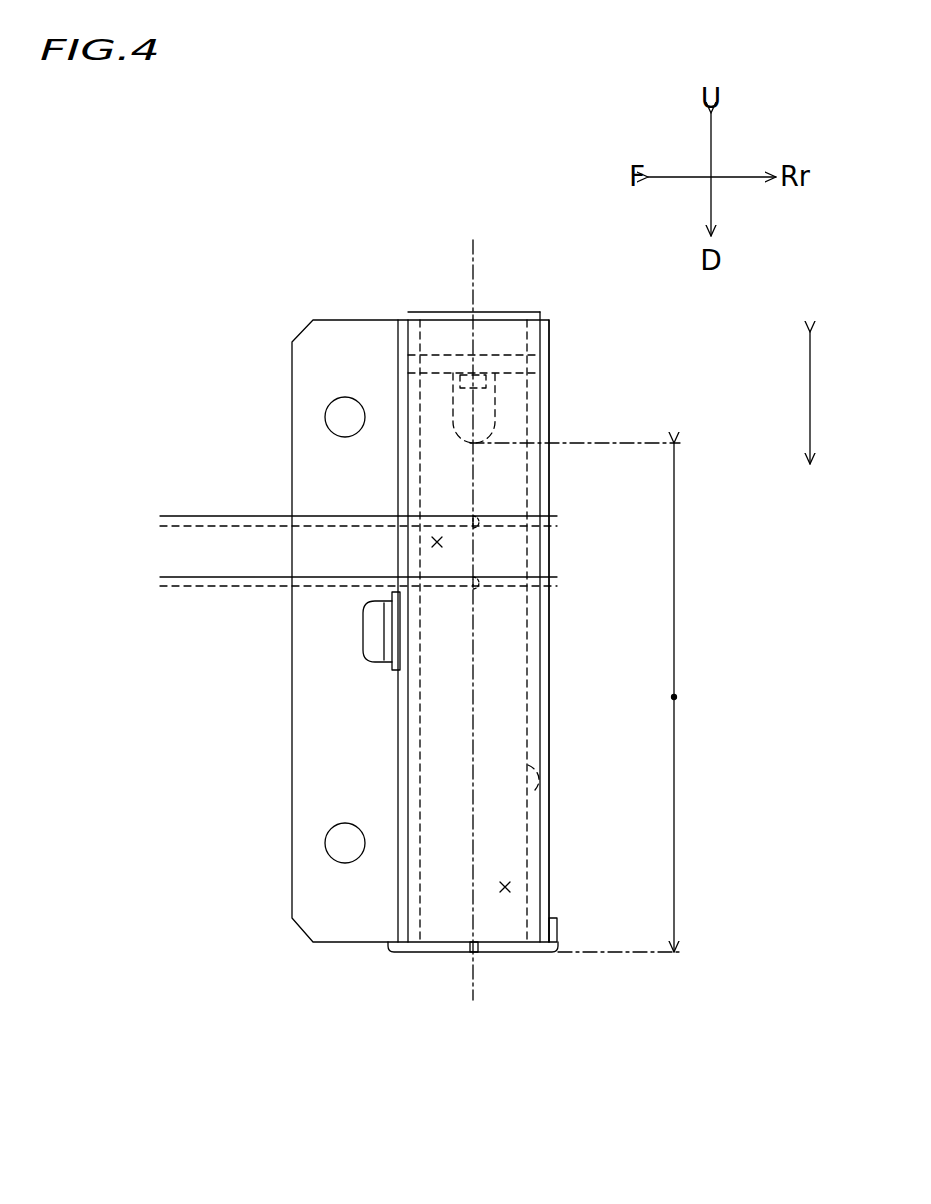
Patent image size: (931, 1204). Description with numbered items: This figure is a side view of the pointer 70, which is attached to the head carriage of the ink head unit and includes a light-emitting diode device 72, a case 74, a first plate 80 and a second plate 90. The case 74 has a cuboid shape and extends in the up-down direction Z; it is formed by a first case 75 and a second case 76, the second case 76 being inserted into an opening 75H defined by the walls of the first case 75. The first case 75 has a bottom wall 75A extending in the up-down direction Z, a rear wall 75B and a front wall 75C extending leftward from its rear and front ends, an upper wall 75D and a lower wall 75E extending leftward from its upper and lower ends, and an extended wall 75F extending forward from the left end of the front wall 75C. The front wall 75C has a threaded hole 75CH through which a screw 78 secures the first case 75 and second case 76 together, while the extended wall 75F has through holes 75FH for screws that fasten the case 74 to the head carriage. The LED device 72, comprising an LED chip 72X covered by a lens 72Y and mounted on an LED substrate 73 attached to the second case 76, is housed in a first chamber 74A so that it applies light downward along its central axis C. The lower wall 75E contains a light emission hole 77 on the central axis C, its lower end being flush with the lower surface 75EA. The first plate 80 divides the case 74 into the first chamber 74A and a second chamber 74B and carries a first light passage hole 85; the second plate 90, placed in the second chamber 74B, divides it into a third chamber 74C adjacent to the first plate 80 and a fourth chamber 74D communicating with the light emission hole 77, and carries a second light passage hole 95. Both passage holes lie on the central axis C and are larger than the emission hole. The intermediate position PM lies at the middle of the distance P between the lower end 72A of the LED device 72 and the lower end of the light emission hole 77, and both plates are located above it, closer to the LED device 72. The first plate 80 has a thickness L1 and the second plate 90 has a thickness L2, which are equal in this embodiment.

The pointer 70 is at (273, 287).
The light-emitting diode (LED) device 72 is at (500, 388).
The lower end of the LED device 72A is at (475, 443).
The LED chip 72X is at (460, 375).
The lens 72Y is at (470, 425).
The LED substrate 73 is at (500, 360).
The case 74 is at (350, 312).
The first chamber 74A is at (516, 434).
The second chamber 74B is at (515, 676).
The third chamber 74C is at (432, 542).
The fourth chamber 74D is at (510, 887).
The first case 75 is at (348, 942).
The bottom wall 75A is at (512, 946).
The rear wall 75B is at (548, 730).
The front wall 75C is at (420, 570).
The threaded hole 75CH is at (395, 625).
The upper wall 75D is at (485, 312).
The lower wall 75E is at (495, 952).
The lower surface of the lower wall 75EA is at (413, 952).
The extended wall 75F is at (300, 708).
The through holes 75FH is at (338, 415).
The opening 75H is at (535, 786).
The second case 76 is at (543, 855).
The light emission hole 77 is at (470, 954).
The screw 78 is at (363, 642).
The first plate 80 is at (527, 526).
The first light passage hole 85 is at (485, 512).
The second plate 90 is at (527, 588).
The second light passage hole 95 is at (485, 575).
The central axis C is at (473, 262).
The thickness of the first plate L1 is at (167, 483).
The thickness of the second plate L2 is at (167, 548).
The distance P is at (675, 570).
The intermediate position PM is at (676, 697).
The up-down direction Z is at (823, 398).